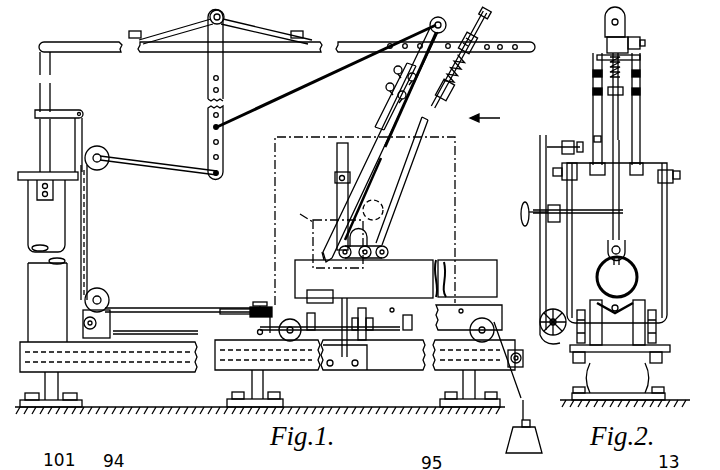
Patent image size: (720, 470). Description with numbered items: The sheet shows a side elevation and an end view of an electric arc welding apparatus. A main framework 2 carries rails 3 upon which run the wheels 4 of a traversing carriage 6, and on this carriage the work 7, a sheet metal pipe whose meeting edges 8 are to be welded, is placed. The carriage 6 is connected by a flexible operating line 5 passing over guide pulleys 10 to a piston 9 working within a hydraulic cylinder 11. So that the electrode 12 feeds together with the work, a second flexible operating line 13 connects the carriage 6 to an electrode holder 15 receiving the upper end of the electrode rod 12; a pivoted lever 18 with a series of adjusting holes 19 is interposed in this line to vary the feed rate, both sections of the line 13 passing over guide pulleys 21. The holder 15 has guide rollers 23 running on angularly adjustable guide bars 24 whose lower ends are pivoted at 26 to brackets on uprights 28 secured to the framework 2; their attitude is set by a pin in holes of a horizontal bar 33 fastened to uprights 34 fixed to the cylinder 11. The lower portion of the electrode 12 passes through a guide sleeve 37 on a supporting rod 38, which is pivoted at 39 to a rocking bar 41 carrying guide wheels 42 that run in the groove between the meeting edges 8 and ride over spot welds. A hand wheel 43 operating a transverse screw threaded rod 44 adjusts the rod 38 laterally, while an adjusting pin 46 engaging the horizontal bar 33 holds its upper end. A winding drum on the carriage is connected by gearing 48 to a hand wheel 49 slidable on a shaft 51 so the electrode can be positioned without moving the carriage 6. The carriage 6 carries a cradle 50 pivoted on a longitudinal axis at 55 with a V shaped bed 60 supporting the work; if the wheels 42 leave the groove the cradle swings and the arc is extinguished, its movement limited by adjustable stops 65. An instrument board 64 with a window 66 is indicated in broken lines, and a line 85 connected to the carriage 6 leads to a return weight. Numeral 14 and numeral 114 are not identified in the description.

In FIG. 1, the main framework 2 is at (157, 370).
In FIG. 2, the main framework 2 is at (616, 372).
In FIG. 1, the tracks or rails 3 is at (403, 346).
In FIG. 1, the wheels 4 is at (296, 345).
In FIG. 2, the wheels 4 is at (660, 355).
In FIG. 1, the flexible operating line 5 is at (80, 283).
In FIG. 1, the traversing carriage 6 is at (469, 317).
In FIG. 2, the traversing carriage 6 is at (573, 360).
In FIG. 1, the work 7 is at (426, 278).
In FIG. 2, the work 7 is at (620, 299).
In FIG. 1, the meeting edges 8 is at (323, 252).
In FIG. 2, the meeting edges 8 is at (627, 263).
In FIG. 1, the piston 9 is at (53, 137).
In FIG. 1, the guide pulleys 10 is at (83, 325).
In FIG. 1, the hydraulic cylinder 11 is at (48, 212).
In FIG. 1, the electrode 12 is at (388, 158).
In FIG. 2, the electrode 12 is at (620, 135).
In FIG. 1, the second flexible operating line 13 is at (170, 162).
In FIG. 1, the plate 14 is at (262, 305).
In FIG. 1, the electrode holder 15 is at (385, 105).
In FIG. 1, the pivoted lever 18 is at (210, 91).
In FIG. 1, the adjusting holes 19 is at (218, 170).
In FIG. 1, the guide pulleys 21 is at (106, 166).
In FIG. 2, the guide pulleys 21 is at (607, 12).
In FIG. 1, the guide rollers 23 is at (397, 70).
In FIG. 2, the guide rollers 23 is at (593, 92).
In FIG. 1, the guide bars 24 is at (335, 177).
In FIG. 2, the guide bars 24 is at (640, 92).
In FIG. 2, the pivotal connection 26 is at (617, 173).
In FIG. 1, the uprights 28 is at (338, 200).
In FIG. 2, the uprights 28 is at (665, 212).
In FIG. 1, the horizontal bar 33 is at (104, 42).
In FIG. 2, the horizontal bar 33 is at (630, 40).
In FIG. 1, the uprights 34 is at (50, 78).
In FIG. 1, the guide sleeve 37 is at (322, 247).
In FIG. 1, the supporting rod 38 is at (390, 197).
In FIG. 2, the supporting rod 38 is at (612, 112).
In FIG. 1, the pivot 39 is at (363, 243).
In FIG. 1, the rocking bar 41 is at (377, 248).
In FIG. 1, the guide wheels 42 is at (390, 250).
In FIG. 2, the guide wheels 42 is at (623, 248).
In FIG. 1, the hand wheel 43 is at (383, 210).
In FIG. 2, the hand wheel 43 is at (520, 208).
In FIG. 1, the screw threaded rod 44 is at (450, 80).
In FIG. 2, the screw threaded rod 44 is at (623, 74).
In FIG. 1, the adjusting pin 46 is at (468, 54).
In FIG. 2, the adjusting pin 46 is at (645, 45).
In FIG. 1, the gearing 48 is at (230, 309).
In FIG. 1, the hand wheel 49 is at (360, 368).
In FIG. 1, the cradle 50 is at (312, 292).
In FIG. 2, the cradle 50 is at (608, 305).
In FIG. 1, the shaft 51 is at (380, 312).
In FIG. 2, the pivotal axis 55 is at (616, 326).
In FIG. 2, the V shaped bed 60 is at (617, 277).
In FIG. 1, the instrument board 64 is at (290, 182).
In FIG. 2, the instrument board 64 is at (543, 153).
In FIG. 2, the adjustable stops 65 is at (570, 283).
In FIG. 1, the window 66 is at (300, 214).
In FIG. 1, the line 85 is at (528, 395).
In FIG. 1, the pin 114 is at (463, 311).